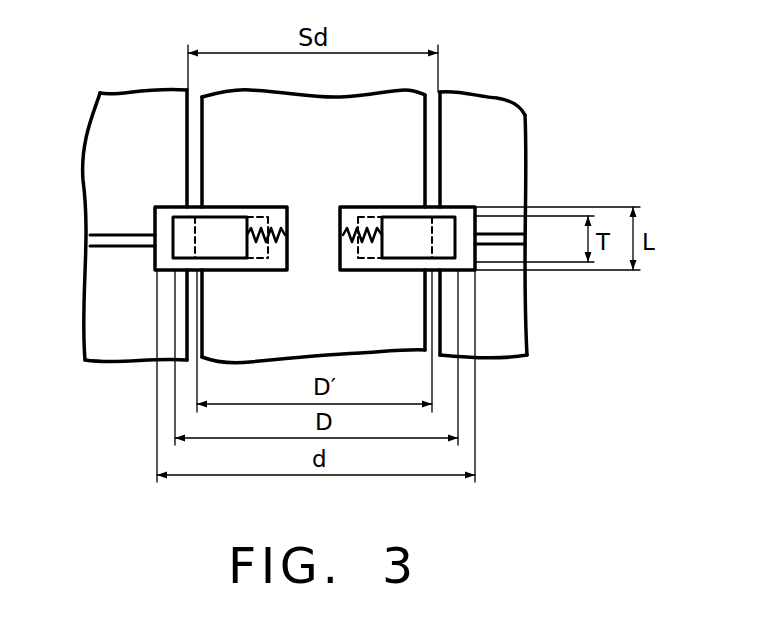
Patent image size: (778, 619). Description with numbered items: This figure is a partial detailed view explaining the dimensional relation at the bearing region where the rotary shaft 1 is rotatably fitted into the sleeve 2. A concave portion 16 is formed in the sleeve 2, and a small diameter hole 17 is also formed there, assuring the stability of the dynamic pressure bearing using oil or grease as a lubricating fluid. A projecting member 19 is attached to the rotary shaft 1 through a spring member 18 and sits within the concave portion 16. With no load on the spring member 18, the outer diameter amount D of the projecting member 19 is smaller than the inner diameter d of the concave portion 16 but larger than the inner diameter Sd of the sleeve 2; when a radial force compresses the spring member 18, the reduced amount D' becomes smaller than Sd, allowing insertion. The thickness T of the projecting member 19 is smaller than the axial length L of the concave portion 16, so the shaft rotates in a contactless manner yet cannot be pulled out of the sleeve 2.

The rotary shaft 1 is at (405, 117).
The sleeve 2 is at (507, 135).
The concave portion 16 is at (163, 224).
The small diameter hole 17 is at (110, 248).
The spring member 18 is at (277, 227).
The projecting member 19 is at (212, 232).